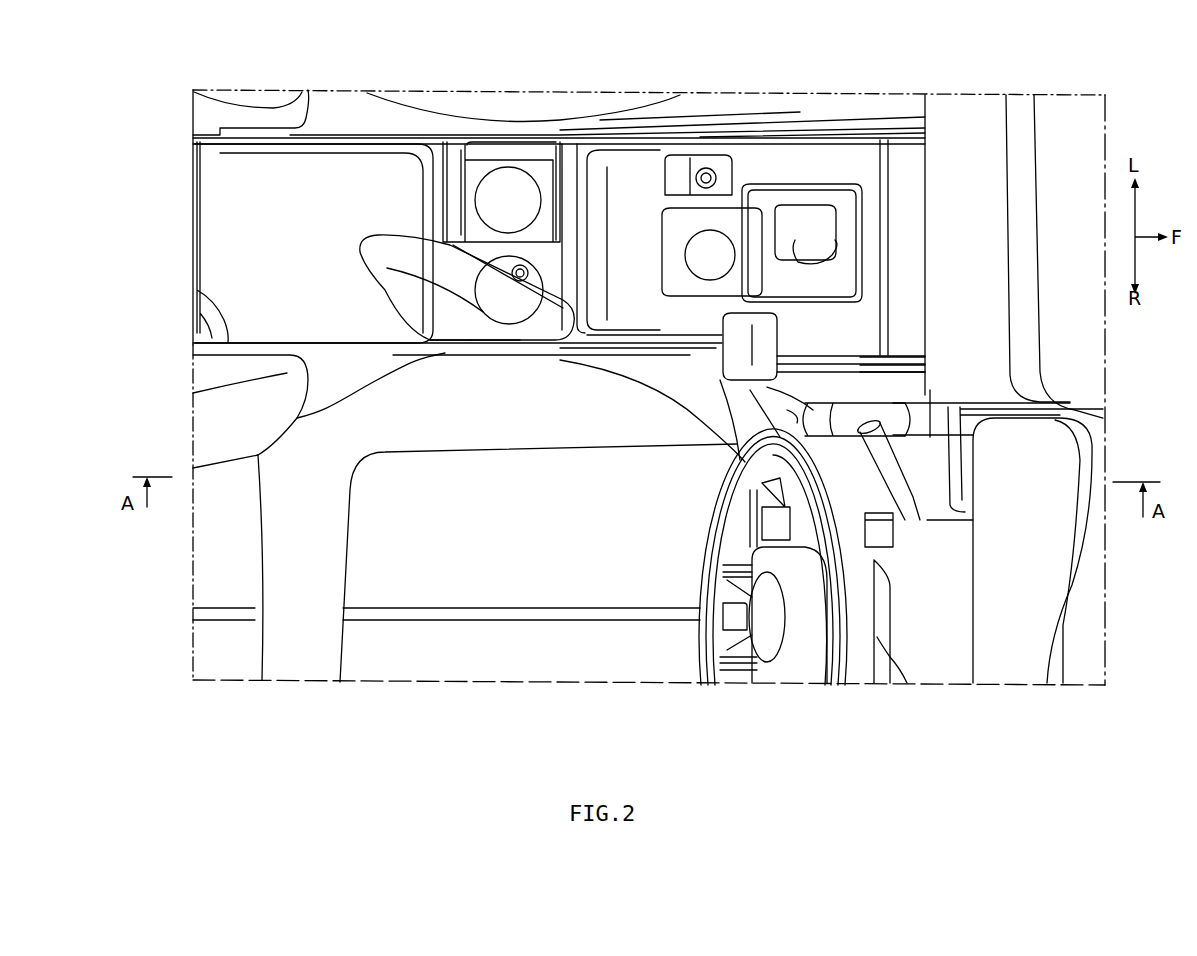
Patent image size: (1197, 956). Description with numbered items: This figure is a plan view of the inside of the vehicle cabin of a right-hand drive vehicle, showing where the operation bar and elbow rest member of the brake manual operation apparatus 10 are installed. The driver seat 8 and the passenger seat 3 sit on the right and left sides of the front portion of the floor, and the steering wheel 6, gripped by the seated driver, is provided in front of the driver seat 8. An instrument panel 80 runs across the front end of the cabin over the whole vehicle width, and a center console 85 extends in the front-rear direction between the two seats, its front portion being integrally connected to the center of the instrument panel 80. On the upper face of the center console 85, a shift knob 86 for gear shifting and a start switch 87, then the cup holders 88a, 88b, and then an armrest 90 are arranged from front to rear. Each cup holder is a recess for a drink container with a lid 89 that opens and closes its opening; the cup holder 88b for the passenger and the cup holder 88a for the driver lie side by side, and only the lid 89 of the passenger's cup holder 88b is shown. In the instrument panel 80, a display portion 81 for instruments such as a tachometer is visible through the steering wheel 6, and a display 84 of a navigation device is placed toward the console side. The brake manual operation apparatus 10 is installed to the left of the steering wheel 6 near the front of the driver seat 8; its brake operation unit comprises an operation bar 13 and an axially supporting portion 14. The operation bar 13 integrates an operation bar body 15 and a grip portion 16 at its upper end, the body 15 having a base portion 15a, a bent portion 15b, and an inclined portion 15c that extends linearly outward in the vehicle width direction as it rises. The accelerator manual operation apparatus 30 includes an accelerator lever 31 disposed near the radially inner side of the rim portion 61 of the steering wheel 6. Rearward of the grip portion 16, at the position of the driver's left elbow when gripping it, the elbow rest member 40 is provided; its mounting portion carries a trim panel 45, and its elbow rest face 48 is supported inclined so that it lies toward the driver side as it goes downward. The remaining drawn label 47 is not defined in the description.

The passenger seat 3 is at (267, 136).
The steering wheel 6 is at (907, 683).
The driver seat 8 is at (197, 290).
The brake manual operation apparatus 10 is at (708, 360).
The operation bar 13 is at (843, 398).
The axially supporting portion 14 is at (932, 418).
The operation bar body 15 is at (863, 398).
The base portion 15a is at (892, 398).
The bent portion 15b is at (790, 416).
The inclined portion 15c is at (760, 396).
The grip portion 16 is at (779, 328).
The accelerator manual operation apparatus 30 is at (698, 557).
The accelerator lever 31 is at (725, 500).
The elbow rest member 40 is at (370, 289).
The trim panel 45 is at (478, 242).
The mirror lower edge 47 is at (450, 320).
The elbow rest face 48 is at (483, 320).
The rim portion 61 is at (883, 592).
The instrument panel 80 is at (922, 112).
The display portion 81 is at (1005, 650).
The display 84 is at (880, 130).
The center console 85 is at (710, 112).
The shift knob 86 is at (815, 205).
The start switch 87 is at (725, 210).
The cup holder 88a is at (527, 276).
The cup holder 88b is at (540, 192).
The lid 89 is at (482, 152).
The armrest 90 is at (331, 138).